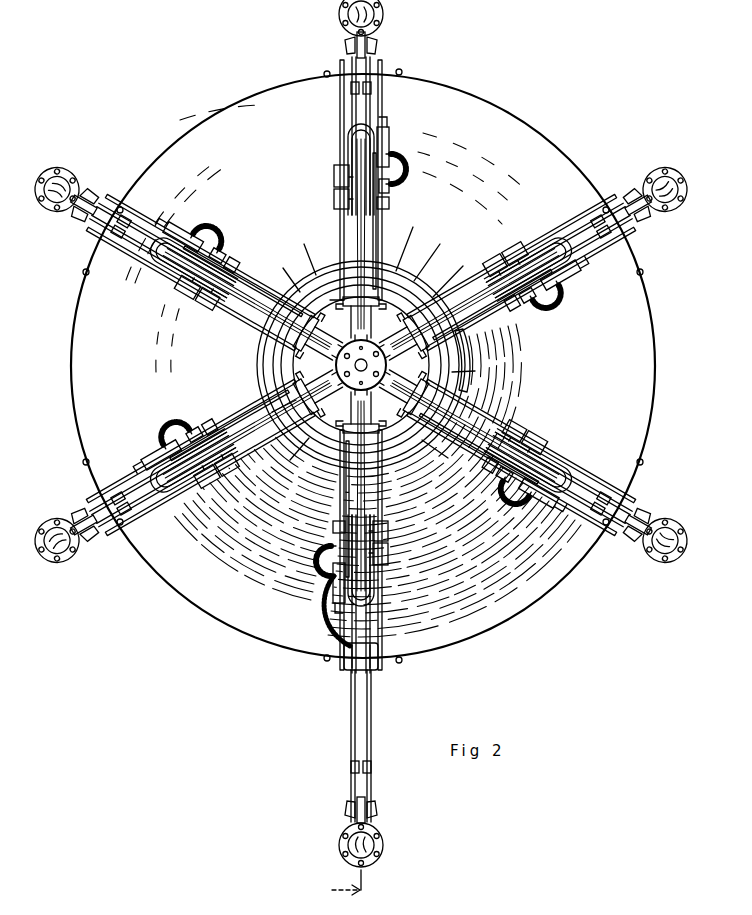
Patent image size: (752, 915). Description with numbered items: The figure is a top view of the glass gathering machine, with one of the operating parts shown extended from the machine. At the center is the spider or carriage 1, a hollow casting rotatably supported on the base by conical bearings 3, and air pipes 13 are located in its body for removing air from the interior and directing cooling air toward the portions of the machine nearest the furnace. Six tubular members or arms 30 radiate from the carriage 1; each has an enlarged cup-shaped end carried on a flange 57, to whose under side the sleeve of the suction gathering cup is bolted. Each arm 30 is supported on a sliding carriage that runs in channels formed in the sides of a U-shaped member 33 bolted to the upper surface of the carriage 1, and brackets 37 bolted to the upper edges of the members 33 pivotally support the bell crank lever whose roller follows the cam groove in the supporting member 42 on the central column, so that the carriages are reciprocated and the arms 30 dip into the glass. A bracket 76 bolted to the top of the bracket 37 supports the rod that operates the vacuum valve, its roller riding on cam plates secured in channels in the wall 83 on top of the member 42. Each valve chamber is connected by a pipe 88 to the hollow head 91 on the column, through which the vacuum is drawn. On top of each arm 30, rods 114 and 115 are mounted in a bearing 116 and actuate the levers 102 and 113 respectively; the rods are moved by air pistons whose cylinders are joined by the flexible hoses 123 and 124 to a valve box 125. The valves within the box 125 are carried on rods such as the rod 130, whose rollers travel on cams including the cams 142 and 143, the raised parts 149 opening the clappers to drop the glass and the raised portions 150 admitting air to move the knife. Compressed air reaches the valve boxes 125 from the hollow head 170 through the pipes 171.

The spider or carriage 1 is at (541, 150).
The conical bearings 3 is at (337, 599).
The air pipes 13 is at (324, 72).
The tubular members or arms 30 is at (380, 16).
The U-shaped members 33 is at (165, 214).
The brackets 37 is at (336, 188).
The supporting member 42 is at (272, 360).
The flange 57 is at (340, 16).
The bracket 76 is at (388, 186).
The wall 83 is at (464, 350).
The pipe 88 is at (358, 218).
The chamber or hollow head 91 is at (383, 296).
The lever 102 is at (377, 48).
The lever 113 is at (345, 46).
The rod 114 is at (372, 110).
The rod 115 is at (354, 108).
The bearing 116 is at (372, 90).
The flexible hose 123 is at (404, 168).
The flexible hose 124 is at (334, 626).
The valve box 125 is at (390, 146).
The rod 130 is at (384, 250).
The cam 142 is at (305, 286).
The cam 143 is at (404, 300).
The raised parts 149 is at (316, 275).
The raised portions 150 is at (443, 312).
The hollow head 170 is at (430, 298).
The pipes 171 is at (386, 206).